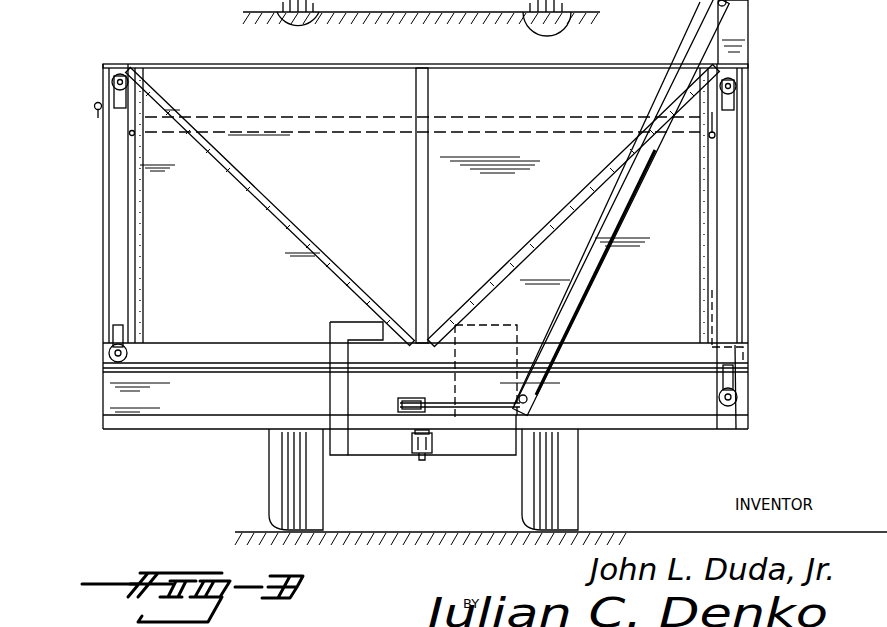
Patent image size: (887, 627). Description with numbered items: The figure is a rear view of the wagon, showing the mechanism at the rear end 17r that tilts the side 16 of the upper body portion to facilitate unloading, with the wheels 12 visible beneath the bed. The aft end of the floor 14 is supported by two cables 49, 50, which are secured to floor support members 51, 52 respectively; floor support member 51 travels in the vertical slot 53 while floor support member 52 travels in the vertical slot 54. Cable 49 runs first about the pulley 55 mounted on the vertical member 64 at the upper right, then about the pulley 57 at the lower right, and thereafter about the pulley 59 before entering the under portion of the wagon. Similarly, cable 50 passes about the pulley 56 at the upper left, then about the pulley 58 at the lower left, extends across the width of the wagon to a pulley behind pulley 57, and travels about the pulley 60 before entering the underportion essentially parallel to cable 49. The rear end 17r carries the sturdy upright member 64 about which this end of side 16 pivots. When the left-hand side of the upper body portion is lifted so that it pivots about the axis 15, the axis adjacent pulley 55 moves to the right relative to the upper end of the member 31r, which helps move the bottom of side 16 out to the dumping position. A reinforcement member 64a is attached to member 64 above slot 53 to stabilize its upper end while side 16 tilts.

The wheels 12 is at (270, 480).
The floor 14 is at (518, 117).
The pivot points 15 is at (740, 397).
The side 16 is at (735, 22).
The rear end 17r is at (590, 66).
The rear pivoting member 31r is at (625, 188).
The cable 49 is at (735, 180).
The cable 50 is at (110, 183).
The floor support member 51 is at (716, 135).
The floor support member 52 is at (130, 133).
The vertical slot 53 is at (715, 220).
The vertical slot 54 is at (133, 218).
The pulley 55 is at (738, 86).
The pulley 56 is at (112, 81).
The pulley 57 is at (735, 430).
The pulley 58 is at (112, 355).
The pulley 59 is at (403, 420).
The pulley 60 is at (410, 400).
The vertical member 64 is at (735, 73).
The reinforcement member 64a is at (538, 228).